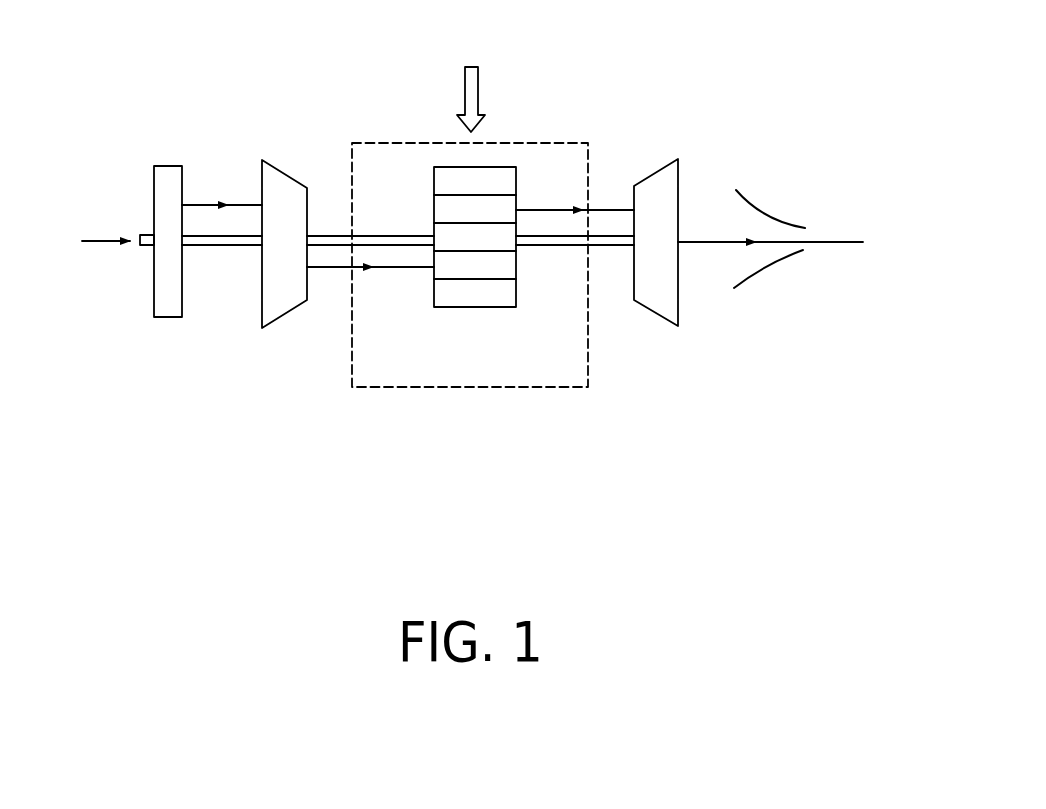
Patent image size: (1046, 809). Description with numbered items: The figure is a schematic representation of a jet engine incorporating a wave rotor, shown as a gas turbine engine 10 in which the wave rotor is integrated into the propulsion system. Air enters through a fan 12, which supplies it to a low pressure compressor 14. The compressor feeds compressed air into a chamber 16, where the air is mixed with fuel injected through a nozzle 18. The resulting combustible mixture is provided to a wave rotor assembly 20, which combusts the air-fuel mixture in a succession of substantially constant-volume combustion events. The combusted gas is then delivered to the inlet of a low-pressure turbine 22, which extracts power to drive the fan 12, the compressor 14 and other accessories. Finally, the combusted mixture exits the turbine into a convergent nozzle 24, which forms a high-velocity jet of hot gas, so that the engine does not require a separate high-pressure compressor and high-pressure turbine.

The gas turbine engine 10 is at (552, 82).
The fan 12 is at (166, 299).
The low pressure compressor 14 is at (269, 287).
The chamber 16 is at (409, 372).
The nozzle 18 is at (364, 269).
The wave rotor assembly 20 is at (494, 257).
The low-pressure turbine 22 is at (668, 188).
The convergent nozzle 24 is at (770, 204).